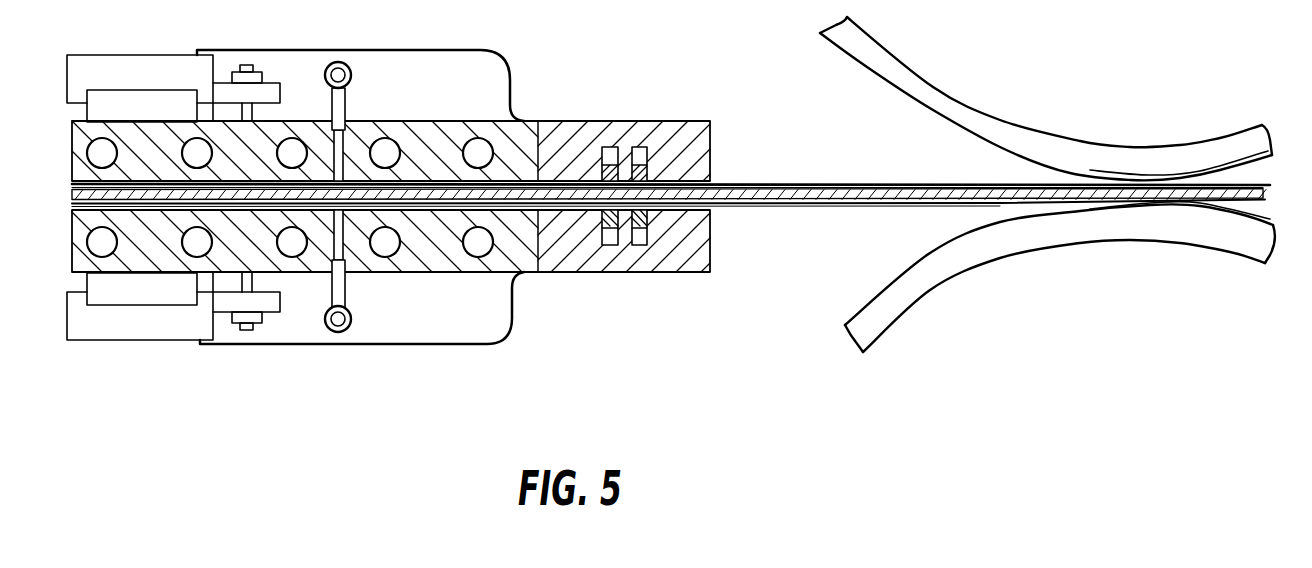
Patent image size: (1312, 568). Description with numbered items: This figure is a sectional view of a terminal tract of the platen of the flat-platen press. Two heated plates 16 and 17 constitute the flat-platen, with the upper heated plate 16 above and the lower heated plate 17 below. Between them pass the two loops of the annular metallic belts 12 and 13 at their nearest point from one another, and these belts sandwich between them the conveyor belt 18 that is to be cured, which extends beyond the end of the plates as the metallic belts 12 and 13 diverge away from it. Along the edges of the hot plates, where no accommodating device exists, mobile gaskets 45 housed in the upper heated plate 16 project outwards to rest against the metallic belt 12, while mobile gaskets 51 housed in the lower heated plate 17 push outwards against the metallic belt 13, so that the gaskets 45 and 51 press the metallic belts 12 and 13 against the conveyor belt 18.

The annular metallic belt 12 is at (803, 183).
The annular metallic belt 13 is at (792, 204).
The heated plate 16 is at (508, 146).
The heated plate 17 is at (505, 240).
The conveyor belt 18 is at (856, 190).
The gaskets 45 is at (643, 147).
The gaskets 51 is at (643, 246).